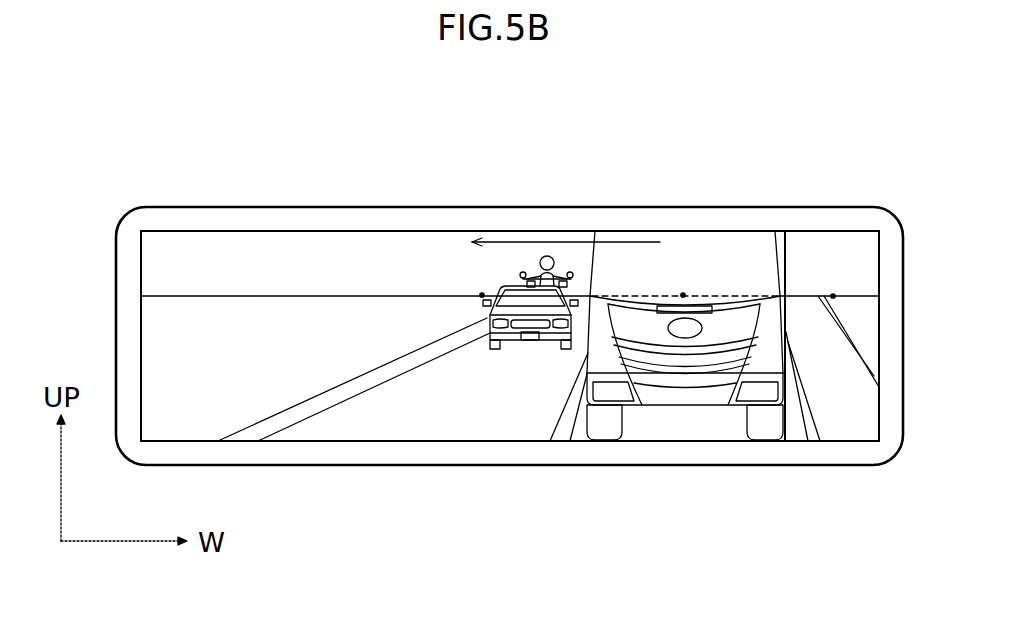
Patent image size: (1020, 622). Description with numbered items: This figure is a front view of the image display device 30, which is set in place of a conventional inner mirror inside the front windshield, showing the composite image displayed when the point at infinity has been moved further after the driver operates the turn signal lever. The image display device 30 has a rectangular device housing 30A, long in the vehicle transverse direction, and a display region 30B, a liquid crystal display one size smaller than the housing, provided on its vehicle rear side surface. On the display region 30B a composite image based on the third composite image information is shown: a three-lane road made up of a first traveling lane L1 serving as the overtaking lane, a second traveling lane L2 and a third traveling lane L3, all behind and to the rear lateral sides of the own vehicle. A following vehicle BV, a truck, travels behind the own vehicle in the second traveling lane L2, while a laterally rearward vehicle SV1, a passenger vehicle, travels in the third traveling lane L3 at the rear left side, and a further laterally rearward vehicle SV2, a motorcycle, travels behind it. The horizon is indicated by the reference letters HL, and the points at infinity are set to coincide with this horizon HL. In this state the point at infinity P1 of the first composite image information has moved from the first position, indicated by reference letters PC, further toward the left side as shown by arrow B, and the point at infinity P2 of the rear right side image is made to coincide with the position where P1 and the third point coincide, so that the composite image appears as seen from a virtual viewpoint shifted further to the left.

The image display device 30 is at (605, 160).
The device housing 30A is at (290, 207).
The display region 30B is at (745, 230).
The following vehicle BV is at (788, 267).
The horizon HL is at (263, 296).
The laterally rearward vehicle SV1 is at (527, 344).
The laterally rearward vehicle SV2 is at (553, 257).
The coincidence position of points at infinity PC is at (482, 295).
The point at infinity P1 is at (685, 293).
The point at infinity P2 is at (833, 294).
The arrow B is at (578, 243).
The first traveling lane L1 is at (832, 368).
The second traveling lane L2 is at (683, 426).
The third traveling lane L3 is at (403, 379).